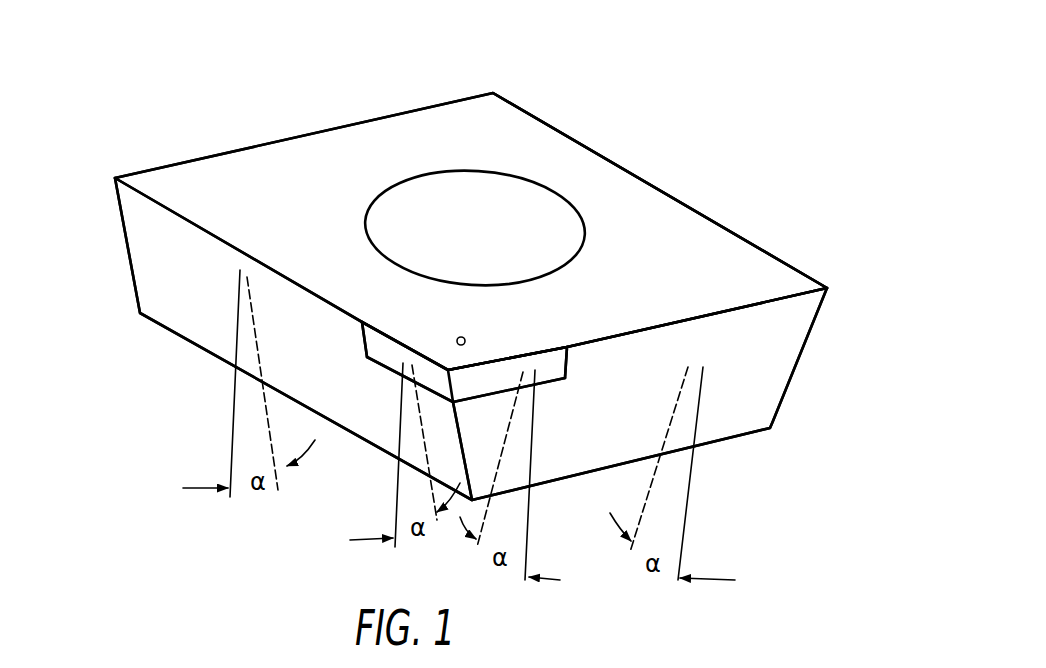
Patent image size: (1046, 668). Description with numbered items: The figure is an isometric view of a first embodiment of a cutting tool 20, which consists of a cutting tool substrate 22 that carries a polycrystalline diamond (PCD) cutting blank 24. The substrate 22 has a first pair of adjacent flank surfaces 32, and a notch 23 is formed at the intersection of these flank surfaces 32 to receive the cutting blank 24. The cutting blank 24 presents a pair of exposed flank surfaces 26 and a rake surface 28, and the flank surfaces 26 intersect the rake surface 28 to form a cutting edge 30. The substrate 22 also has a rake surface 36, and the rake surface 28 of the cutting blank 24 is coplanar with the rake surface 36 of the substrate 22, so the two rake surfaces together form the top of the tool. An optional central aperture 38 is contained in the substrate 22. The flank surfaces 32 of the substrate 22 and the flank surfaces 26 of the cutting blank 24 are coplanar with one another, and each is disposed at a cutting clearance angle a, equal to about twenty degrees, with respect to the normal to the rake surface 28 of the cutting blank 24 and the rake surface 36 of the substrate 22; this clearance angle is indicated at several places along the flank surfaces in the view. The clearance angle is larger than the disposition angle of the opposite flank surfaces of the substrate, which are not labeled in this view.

The cutting tool 20 is at (674, 91).
The cutting tool substrate 22 is at (683, 240).
The notch 23 is at (463, 336).
The polycrystalline diamond (PCD) cutting blank 24 is at (410, 333).
The flank surfaces 26 is at (375, 342).
The rake surface 28 is at (492, 350).
The cutting edge 30 is at (385, 365).
The first pair of adjacent flank surfaces 32 is at (443, 455).
The rake surface 36 is at (507, 145).
The central aperture 38 is at (393, 200).